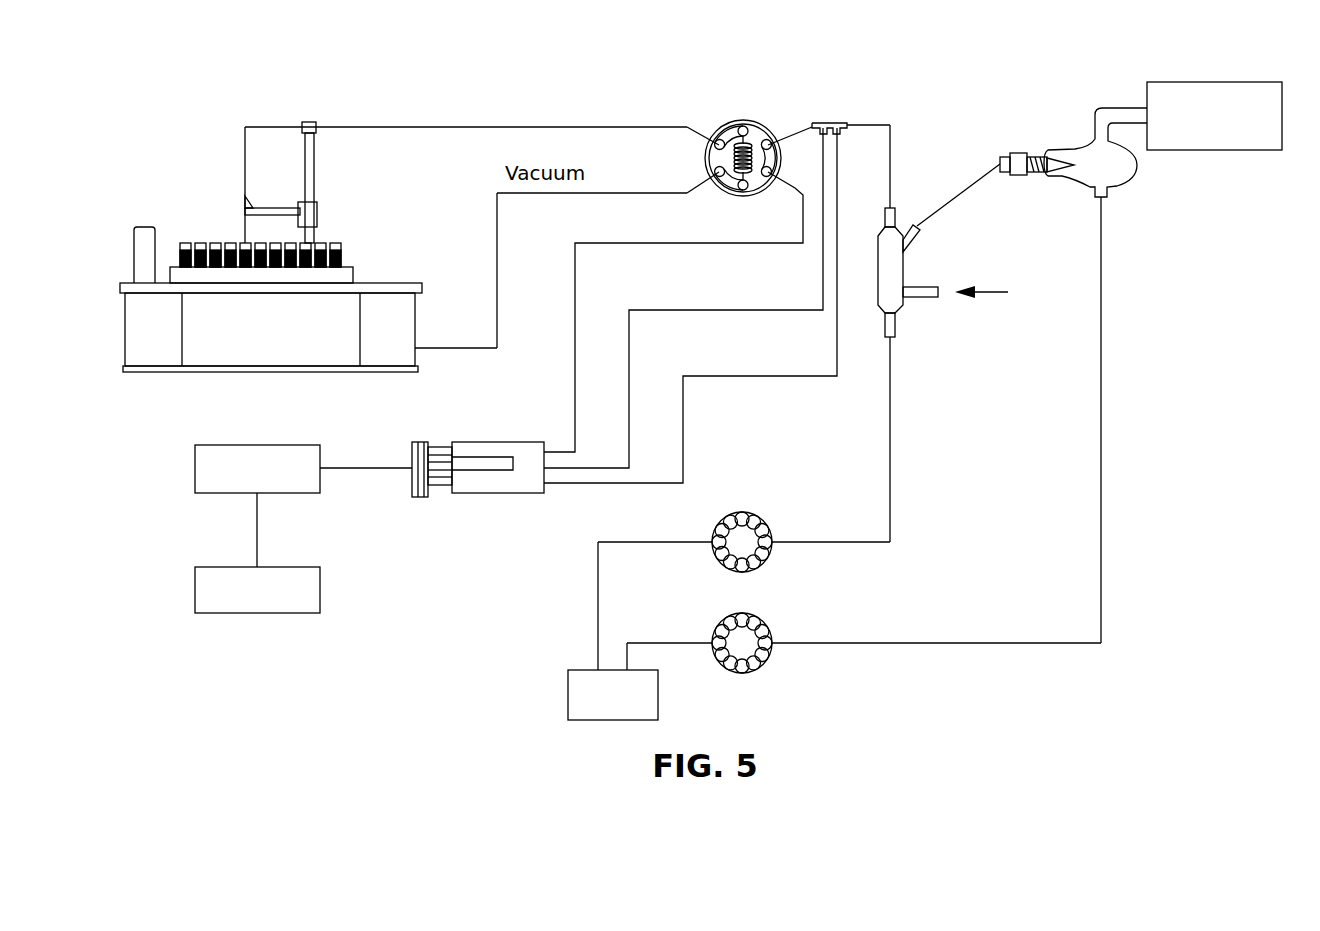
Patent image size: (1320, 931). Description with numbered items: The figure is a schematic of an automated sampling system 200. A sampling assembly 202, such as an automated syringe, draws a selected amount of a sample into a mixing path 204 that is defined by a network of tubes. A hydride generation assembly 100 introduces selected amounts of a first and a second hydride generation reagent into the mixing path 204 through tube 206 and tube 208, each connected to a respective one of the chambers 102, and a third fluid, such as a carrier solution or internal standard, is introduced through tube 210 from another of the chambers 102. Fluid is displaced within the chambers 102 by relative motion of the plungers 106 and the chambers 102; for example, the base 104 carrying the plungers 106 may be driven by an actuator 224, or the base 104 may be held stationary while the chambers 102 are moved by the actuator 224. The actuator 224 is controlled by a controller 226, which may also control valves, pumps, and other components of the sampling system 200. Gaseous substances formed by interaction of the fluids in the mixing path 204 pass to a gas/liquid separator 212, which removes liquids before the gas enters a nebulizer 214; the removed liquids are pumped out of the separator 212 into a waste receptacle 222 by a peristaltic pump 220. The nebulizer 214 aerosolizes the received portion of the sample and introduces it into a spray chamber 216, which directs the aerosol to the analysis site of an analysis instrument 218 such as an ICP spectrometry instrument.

The sampling system 200 is at (240, 66).
The sampling assembly 202 is at (238, 228).
The mixing path 204 is at (497, 113).
The tube 206 is at (762, 376).
The tube 208 is at (727, 310).
The tube 210 is at (690, 243).
The gas/liquid separator 212 is at (898, 315).
The nebulizer 214 is at (1036, 174).
The spray chamber 216 is at (1118, 185).
The analysis instrument 218 is at (1213, 82).
The peristaltic pump 220 is at (742, 572).
The waste receptacle 222 is at (585, 670).
The actuator 224 is at (228, 445).
The controller 226 is at (228, 567).
The hydride generation assembly 100 is at (440, 471).
The chambers 102 is at (497, 442).
The base 104 is at (416, 443).
The plungers 106 is at (441, 447).